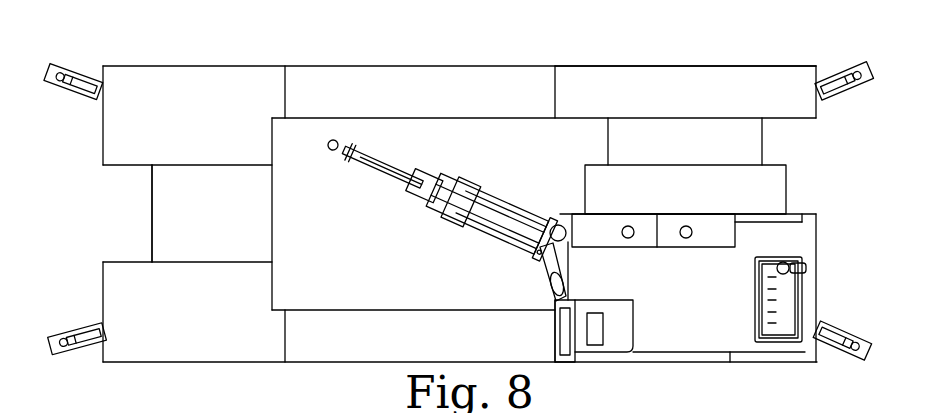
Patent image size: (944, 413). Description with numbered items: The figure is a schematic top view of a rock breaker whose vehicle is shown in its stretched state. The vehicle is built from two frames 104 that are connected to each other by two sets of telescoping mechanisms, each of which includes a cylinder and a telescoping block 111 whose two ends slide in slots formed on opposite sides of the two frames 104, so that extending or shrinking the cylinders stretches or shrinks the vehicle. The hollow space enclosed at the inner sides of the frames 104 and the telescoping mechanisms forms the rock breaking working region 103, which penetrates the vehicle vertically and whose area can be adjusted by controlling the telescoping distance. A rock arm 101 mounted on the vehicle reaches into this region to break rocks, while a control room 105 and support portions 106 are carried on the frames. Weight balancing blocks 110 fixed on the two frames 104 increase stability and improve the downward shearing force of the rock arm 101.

The rock arm 101 is at (478, 185).
The rock breaking working region 103 is at (355, 135).
The frame 104 is at (407, 88).
The control room 105 is at (596, 310).
The support portion 106 is at (835, 85).
The weight balancing block 110 is at (643, 88).
The telescoping block 111 is at (230, 200).